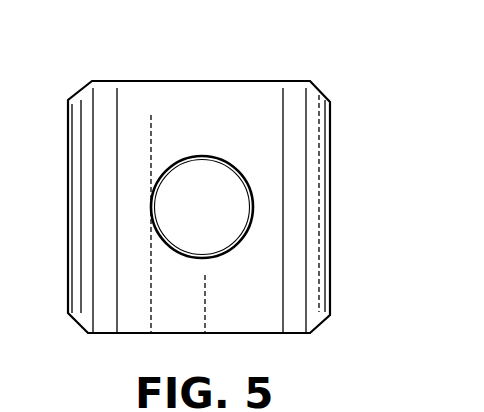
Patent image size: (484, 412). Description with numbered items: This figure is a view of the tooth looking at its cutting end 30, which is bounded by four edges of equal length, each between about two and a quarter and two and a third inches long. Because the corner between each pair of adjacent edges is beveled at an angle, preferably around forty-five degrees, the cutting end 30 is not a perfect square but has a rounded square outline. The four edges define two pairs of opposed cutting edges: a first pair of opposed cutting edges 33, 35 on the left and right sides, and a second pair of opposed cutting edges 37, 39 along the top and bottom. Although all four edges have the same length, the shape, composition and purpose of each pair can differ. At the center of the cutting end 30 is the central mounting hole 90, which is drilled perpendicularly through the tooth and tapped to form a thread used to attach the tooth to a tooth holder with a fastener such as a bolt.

The cutting end 30 is at (180, 103).
The first opposed cutting edge 33 is at (68, 150).
The first opposed cutting edge 35 is at (332, 150).
The second opposed cutting edge 37 is at (220, 80).
The second opposed cutting edge 39 is at (220, 335).
The central mounting hole 90 is at (175, 205).